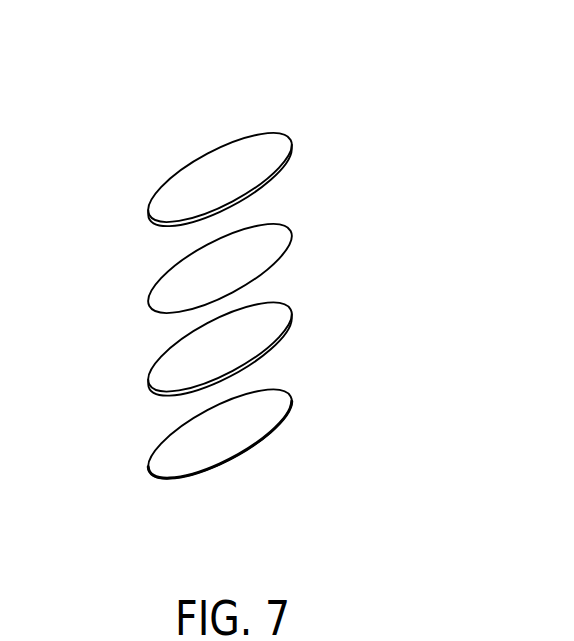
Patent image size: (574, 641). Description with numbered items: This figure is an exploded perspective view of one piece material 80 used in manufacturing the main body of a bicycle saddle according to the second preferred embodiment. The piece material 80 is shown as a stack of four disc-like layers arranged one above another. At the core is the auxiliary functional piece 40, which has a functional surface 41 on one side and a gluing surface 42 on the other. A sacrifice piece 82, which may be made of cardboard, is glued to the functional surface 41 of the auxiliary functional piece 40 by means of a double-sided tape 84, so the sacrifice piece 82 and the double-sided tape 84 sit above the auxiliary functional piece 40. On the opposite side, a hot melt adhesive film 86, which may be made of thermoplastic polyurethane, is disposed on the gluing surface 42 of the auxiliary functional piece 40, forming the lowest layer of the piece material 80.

The piece material 80 is at (350, 70).
The sacrifice piece 82 is at (293, 147).
The double-sided tape 84 is at (278, 238).
The auxiliary functional piece 40 is at (142, 358).
The functional surface 41 is at (283, 313).
The gluing surface 42 is at (278, 343).
The hot melt adhesive film 86 is at (283, 415).